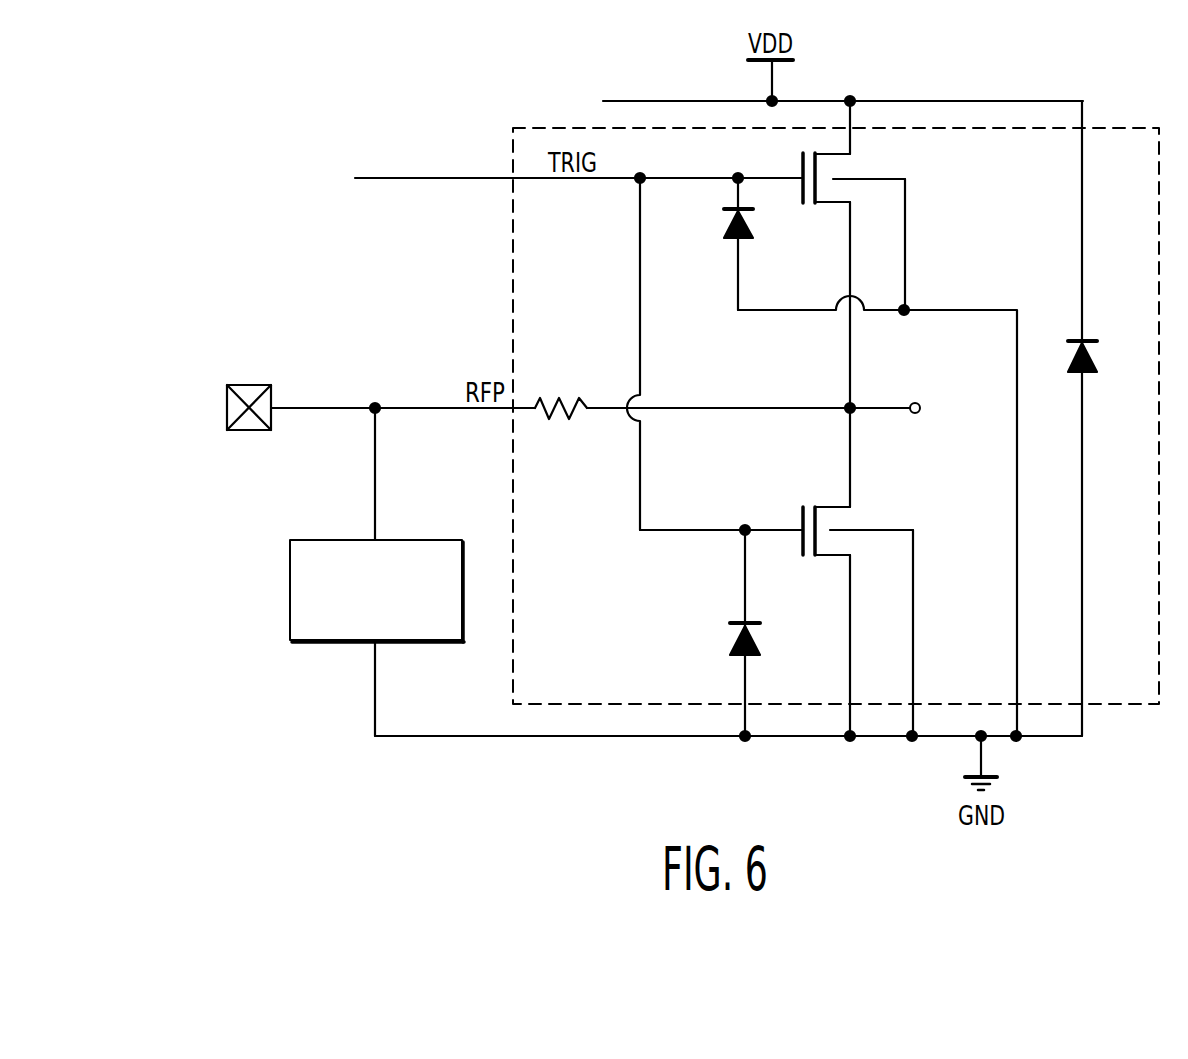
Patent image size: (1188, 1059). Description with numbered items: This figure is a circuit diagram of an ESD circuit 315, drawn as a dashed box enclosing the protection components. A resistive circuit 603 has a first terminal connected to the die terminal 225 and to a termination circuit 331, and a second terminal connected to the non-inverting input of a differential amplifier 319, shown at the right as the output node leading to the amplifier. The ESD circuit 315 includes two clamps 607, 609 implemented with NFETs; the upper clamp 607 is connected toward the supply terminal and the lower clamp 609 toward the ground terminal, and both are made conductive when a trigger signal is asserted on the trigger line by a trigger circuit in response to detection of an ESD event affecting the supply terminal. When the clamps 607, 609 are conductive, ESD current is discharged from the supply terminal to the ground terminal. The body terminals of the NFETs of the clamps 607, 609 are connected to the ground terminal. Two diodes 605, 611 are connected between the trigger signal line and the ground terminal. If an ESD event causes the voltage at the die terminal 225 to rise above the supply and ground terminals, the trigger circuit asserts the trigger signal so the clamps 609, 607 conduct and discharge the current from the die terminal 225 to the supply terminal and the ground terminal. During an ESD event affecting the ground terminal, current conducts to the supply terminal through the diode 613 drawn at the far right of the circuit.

The die terminal 225 is at (246, 384).
The ESD circuit 315 is at (532, 127).
The termination circuit 331 is at (328, 539).
The resistive circuit 603 is at (558, 395).
The diode 605 is at (727, 225).
The clamp 607 is at (840, 204).
The clamp 609 is at (836, 502).
The diode 611 is at (730, 643).
The diode 613 is at (1094, 362).
The differential amplifier 319 is at (951, 423).